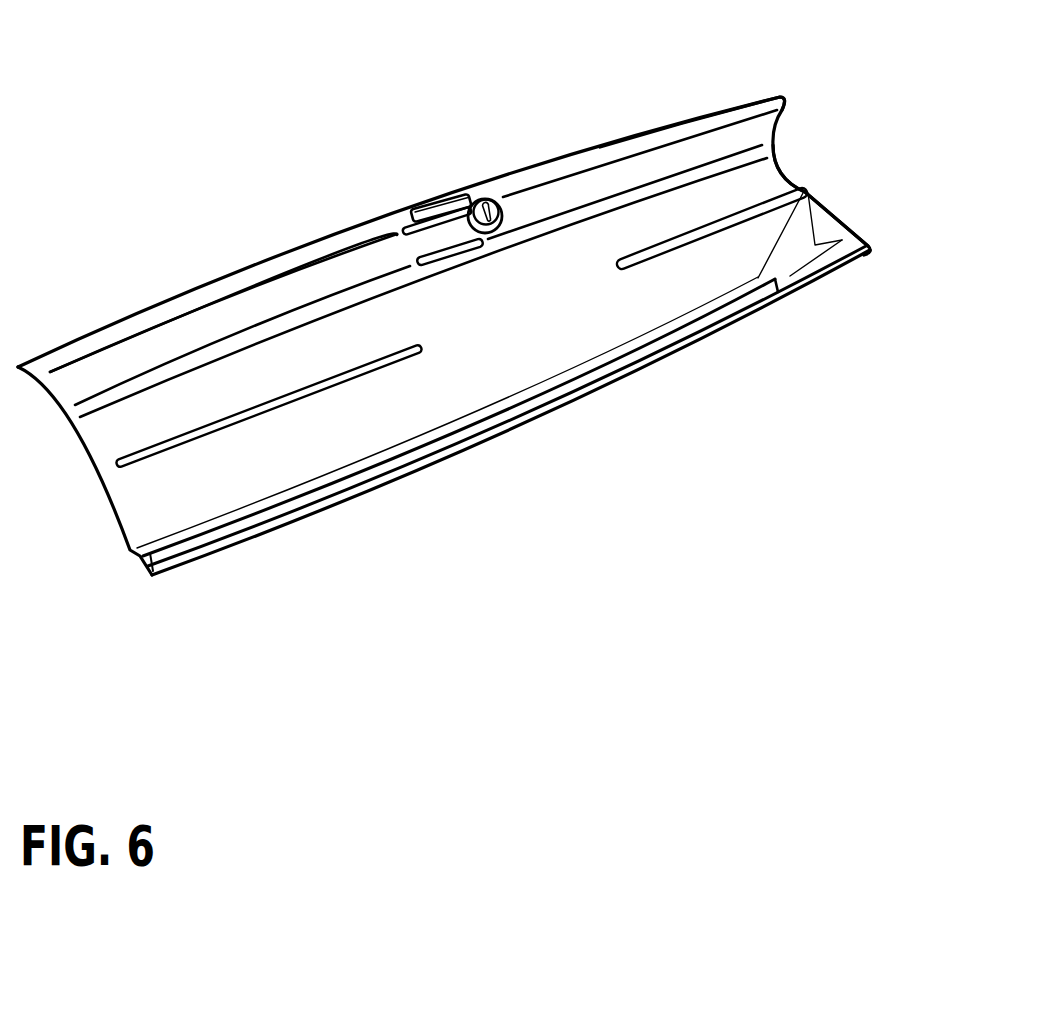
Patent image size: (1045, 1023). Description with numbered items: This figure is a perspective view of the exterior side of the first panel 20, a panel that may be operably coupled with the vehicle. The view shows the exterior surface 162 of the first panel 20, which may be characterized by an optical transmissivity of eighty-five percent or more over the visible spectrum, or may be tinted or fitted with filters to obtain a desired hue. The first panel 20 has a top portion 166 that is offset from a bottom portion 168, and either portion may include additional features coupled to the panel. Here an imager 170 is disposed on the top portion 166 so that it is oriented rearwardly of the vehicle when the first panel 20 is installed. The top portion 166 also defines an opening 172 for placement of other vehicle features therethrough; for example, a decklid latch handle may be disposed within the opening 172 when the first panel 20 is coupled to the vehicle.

The first panel 20 is at (806, 169).
The exterior surface 162 is at (313, 450).
The top portion 166 is at (790, 115).
The bottom portion 168 is at (825, 229).
The imager 170 is at (485, 194).
The opening 172 is at (415, 213).